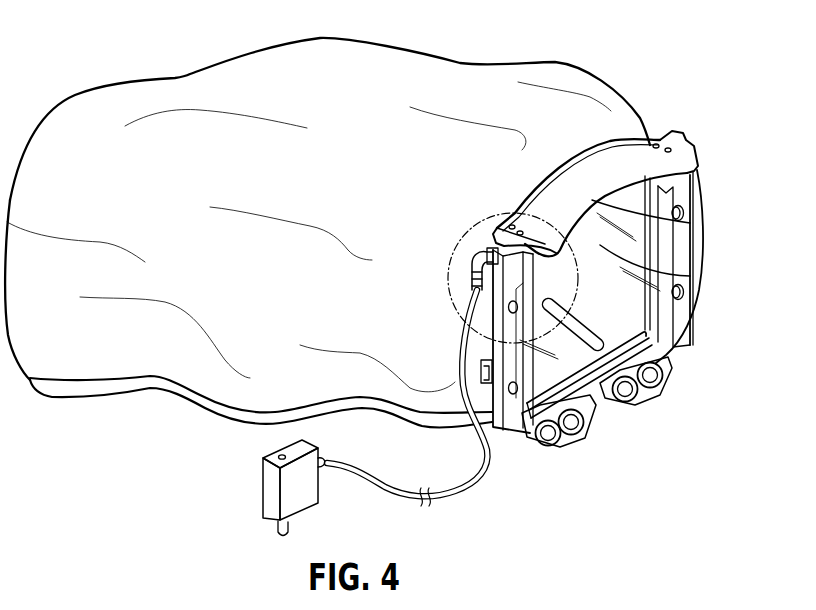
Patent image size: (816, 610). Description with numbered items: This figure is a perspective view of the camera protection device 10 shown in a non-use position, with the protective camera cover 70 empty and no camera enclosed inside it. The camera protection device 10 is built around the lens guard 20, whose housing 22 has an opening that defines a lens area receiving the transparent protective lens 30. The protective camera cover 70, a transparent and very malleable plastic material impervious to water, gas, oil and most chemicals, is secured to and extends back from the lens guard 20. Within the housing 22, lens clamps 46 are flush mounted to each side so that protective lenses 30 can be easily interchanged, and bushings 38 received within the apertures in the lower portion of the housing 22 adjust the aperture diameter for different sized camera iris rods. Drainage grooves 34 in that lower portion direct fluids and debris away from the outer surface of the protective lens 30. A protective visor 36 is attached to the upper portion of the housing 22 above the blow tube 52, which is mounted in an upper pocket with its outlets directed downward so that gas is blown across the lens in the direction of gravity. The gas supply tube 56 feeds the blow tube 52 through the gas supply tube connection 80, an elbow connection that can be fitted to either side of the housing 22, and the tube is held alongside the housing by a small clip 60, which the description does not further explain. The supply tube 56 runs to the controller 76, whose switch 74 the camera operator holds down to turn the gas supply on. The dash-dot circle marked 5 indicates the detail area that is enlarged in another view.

The camera protection device 10 is at (147, 52).
The detail area of FIG. 5 is at (482, 220).
The lens guard 20 is at (639, 285).
The housing 22 is at (696, 213).
The protective lens 30 is at (676, 278).
The drainage grooves 34 is at (665, 355).
The protective visor 36 is at (622, 160).
The bushings 38 is at (634, 395).
The lens clamps 46 is at (674, 246).
The blow tube 52 is at (672, 235).
The gas supply tube 56 is at (468, 486).
The clip 60 is at (459, 380).
The protective camera cover 70 is at (128, 420).
The switch 74 is at (279, 455).
The controller 76 is at (294, 484).
The gas supply tube connection 80 is at (474, 262).